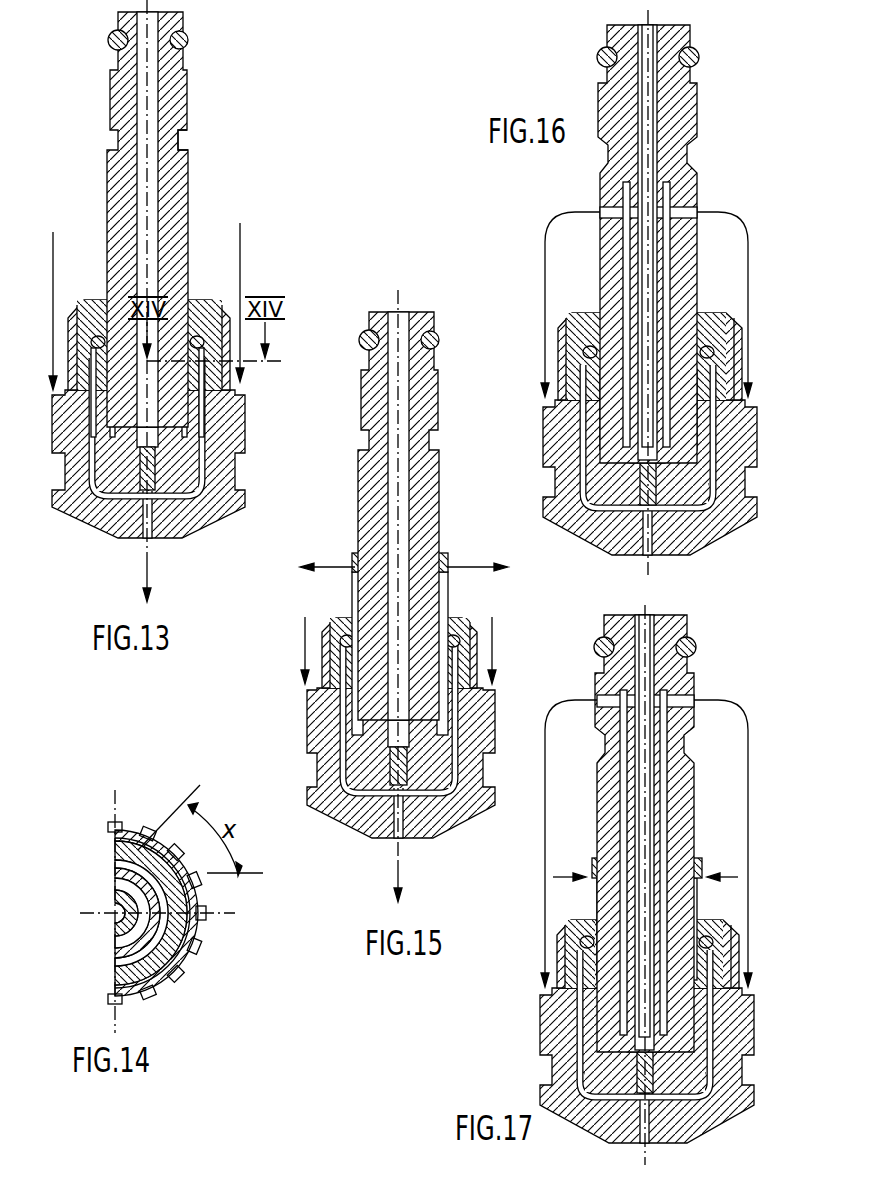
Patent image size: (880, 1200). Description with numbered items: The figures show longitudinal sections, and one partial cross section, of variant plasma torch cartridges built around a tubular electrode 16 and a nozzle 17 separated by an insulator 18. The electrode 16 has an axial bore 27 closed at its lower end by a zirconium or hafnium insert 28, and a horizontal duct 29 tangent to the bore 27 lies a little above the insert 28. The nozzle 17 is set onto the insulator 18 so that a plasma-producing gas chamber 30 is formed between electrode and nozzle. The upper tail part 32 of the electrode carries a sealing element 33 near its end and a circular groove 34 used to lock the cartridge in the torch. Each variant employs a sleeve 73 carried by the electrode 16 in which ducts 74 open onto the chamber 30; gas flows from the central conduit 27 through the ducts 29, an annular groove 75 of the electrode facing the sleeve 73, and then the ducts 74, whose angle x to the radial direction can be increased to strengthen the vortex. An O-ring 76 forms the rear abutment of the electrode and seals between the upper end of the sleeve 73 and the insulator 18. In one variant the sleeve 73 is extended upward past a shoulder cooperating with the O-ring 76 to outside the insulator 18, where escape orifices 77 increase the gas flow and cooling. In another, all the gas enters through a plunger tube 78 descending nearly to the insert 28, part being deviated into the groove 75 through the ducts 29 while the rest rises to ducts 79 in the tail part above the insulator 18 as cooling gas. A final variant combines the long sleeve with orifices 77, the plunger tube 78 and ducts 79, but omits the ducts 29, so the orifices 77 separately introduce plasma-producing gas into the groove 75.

In FIG. 15, the electrode 16 is at (370, 764).
In FIG. 16, the electrode 16 is at (683, 490).
In FIG. 17, the electrode 16 is at (612, 1067).
In FIG. 14, the electrode 16 is at (120, 893).
In FIG. 13, the nozzle 17 is at (208, 510).
In FIG. 15, the nozzle 17 is at (456, 815).
In FIG. 16, the nozzle 17 is at (601, 520).
In FIG. 17, the nozzle 17 is at (722, 1106).
In FIG. 14, the nozzle 17 is at (185, 937).
In FIG. 13, the insulator 18 is at (197, 300).
In FIG. 15, the insulator 18 is at (342, 612).
In FIG. 16, the insulator 18 is at (582, 313).
In FIG. 17, the insulator 18 is at (708, 920).
In FIG. 14, the insulator 18 is at (178, 927).
In FIG. 13, the bore 27 is at (143, 97).
In FIG. 14, the bore 27 is at (118, 919).
In FIG. 13, the insert 28 is at (135, 492).
In FIG. 13, the duct 29 is at (105, 492).
In FIG. 15, the duct 29 is at (399, 719).
In FIG. 16, the duct 29 is at (683, 418).
In FIG. 17, the duct 29 is at (645, 1023).
In FIG. 13, the plasma-producing gas chamber 30 is at (172, 495).
In FIG. 13, the tail part 32 is at (178, 195).
In FIG. 15, the tail part 32 is at (372, 508).
In FIG. 16, the tail part 32 is at (690, 108).
In FIG. 17, the tail part 32 is at (683, 800).
In FIG. 13, the sealing element 33 is at (187, 40).
In FIG. 13, the circular groove 34 is at (180, 143).
In FIG. 13, the sleeve 73 is at (192, 432).
In FIG. 16, the sleeve 73 is at (648, 410).
In FIG. 14, the sleeve 73 is at (118, 962).
In FIG. 13, the ducts 74 is at (97, 388).
In FIG. 15, the ducts 74 is at (312, 689).
In FIG. 16, the ducts 74 is at (588, 400).
In FIG. 17, the ducts 74 is at (710, 962).
In FIG. 14, the ducts 74 is at (128, 835).
In FIG. 13, the annular groove 75 is at (112, 412).
In FIG. 15, the annular groove 75 is at (436, 588).
In FIG. 17, the annular groove 75 is at (603, 895).
In FIG. 14, the annular groove 75 is at (165, 990).
In FIG. 13, the O-ring 76 is at (93, 299).
In FIG. 15, the O-ring 76 is at (332, 618).
In FIG. 16, the O-ring 76 is at (648, 352).
In FIG. 17, the O-ring 76 is at (646, 942).
In FIG. 15, the escape orifices 77 is at (448, 566).
In FIG. 17, the escape orifices 77 is at (592, 866).
In FIG. 16, the plunger tube 78 is at (660, 268).
In FIG. 17, the plunger tube 78 is at (658, 826).
In FIG. 16, the ducts 79 is at (676, 209).
In FIG. 17, the ducts 79 is at (673, 697).